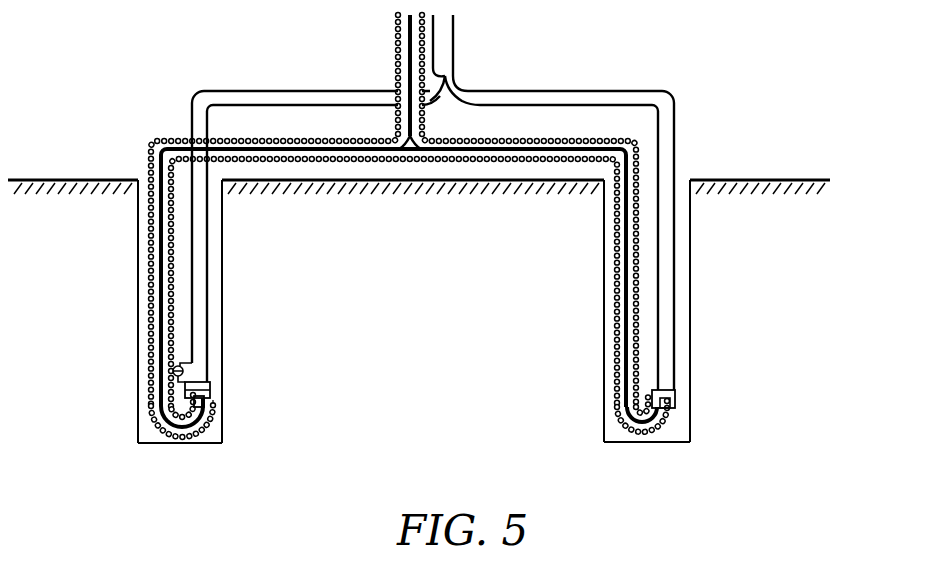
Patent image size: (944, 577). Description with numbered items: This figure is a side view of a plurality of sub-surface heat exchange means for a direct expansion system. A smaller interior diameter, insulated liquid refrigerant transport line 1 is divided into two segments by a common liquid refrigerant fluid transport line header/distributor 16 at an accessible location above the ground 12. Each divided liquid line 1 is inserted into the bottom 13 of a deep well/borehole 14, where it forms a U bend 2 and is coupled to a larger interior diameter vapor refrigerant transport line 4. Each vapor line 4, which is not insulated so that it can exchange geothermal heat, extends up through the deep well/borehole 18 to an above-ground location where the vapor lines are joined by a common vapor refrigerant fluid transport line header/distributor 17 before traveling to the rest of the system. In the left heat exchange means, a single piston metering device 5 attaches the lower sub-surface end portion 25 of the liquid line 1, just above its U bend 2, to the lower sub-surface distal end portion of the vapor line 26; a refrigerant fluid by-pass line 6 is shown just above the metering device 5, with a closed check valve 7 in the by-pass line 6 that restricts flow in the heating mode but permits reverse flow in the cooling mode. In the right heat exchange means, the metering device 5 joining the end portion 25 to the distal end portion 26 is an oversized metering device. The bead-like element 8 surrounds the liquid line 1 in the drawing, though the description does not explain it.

The liquid/fluid refrigerant transport line 1 is at (160, 244).
The U bend 2 is at (172, 437).
The vapor/fluid refrigerant transport line 4 is at (197, 323).
The single piston metering device 5 is at (213, 407).
The refrigerant fluid by-pass line 6 is at (183, 366).
The closed check valve 7 is at (205, 382).
The heat conducting bead chain 8 is at (409, 260).
The ground 12 is at (790, 186).
The bottom of the deep well/borehole 13 is at (137, 443).
The deep well/borehole 14 is at (215, 263).
The common liquid refrigerant fluid transport line header/distributor 16 is at (400, 137).
The common vapor refrigerant fluid transport line header/distributor 17 is at (455, 82).
The deep well/borehole 18 is at (682, 263).
The lower sub-surface end portion of the liquid refrigerant transport line 25 is at (213, 412).
The lower sub-surface distal end portion of the vapor refrigerant transport line 26 is at (205, 390).